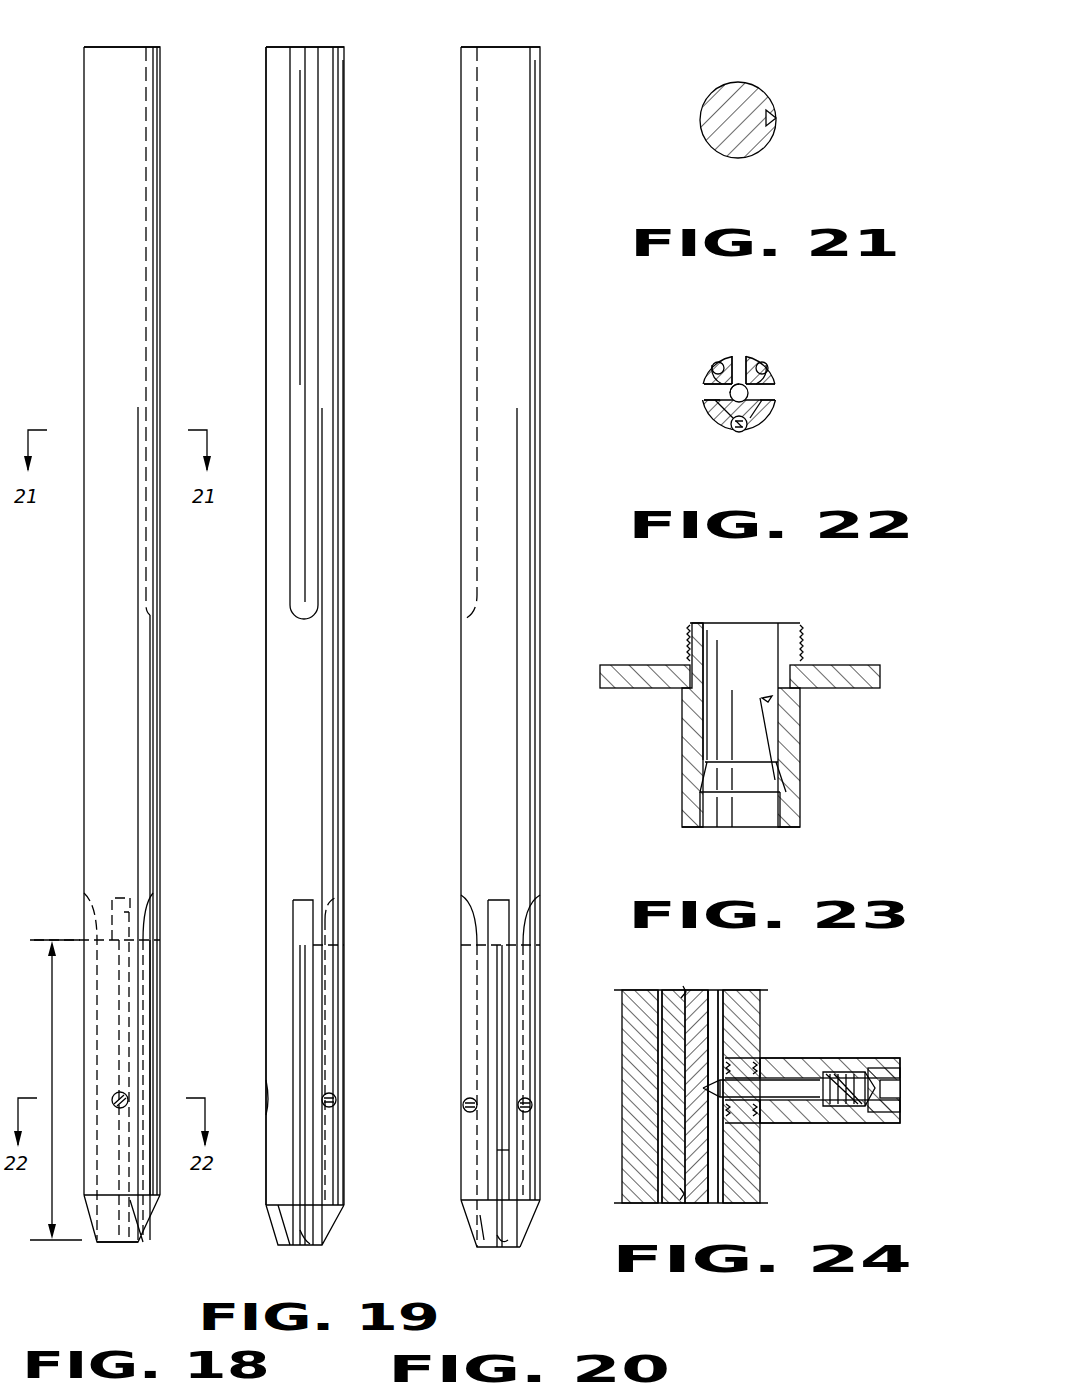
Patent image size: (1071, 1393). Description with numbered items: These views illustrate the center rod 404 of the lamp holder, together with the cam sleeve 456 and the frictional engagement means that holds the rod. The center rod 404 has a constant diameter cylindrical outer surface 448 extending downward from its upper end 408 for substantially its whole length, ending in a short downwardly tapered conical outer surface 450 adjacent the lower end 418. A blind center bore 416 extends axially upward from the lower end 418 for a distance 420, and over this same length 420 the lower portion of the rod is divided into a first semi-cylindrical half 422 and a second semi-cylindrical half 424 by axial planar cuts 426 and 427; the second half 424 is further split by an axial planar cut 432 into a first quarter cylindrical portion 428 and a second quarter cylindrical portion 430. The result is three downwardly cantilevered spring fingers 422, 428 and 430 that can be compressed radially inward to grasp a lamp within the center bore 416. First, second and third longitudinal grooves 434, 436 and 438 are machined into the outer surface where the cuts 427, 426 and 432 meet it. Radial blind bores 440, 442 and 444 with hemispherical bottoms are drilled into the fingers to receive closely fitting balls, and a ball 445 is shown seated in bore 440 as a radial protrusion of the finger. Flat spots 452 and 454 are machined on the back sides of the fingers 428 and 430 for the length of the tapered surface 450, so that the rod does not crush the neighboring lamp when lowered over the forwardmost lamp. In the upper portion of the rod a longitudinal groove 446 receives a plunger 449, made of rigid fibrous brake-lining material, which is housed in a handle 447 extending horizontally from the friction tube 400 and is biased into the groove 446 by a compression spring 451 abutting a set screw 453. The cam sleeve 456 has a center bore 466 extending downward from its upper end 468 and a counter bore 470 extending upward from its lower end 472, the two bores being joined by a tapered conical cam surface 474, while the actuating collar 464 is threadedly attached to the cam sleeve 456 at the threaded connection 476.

In FIG. 24, the friction tube 400 is at (765, 1008).
In FIG. 18, the center rod 404 is at (156, 63).
In FIG. 19, the center rod 404 is at (338, 62).
In FIG. 20, the center rod 404 is at (544, 62).
In FIG. 21, the center rod 404 is at (755, 84).
In FIG. 22, the center rod 404 is at (782, 355).
In FIG. 24, the center rod 404 is at (672, 1010).
In FIG. 18, the upper end 408 is at (102, 46).
In FIG. 19, the upper end 408 is at (285, 46).
In FIG. 20, the upper end 408 is at (486, 46).
In FIG. 22, the blind center bore 416 is at (722, 410).
In FIG. 18, the lower end 418 is at (105, 1248).
In FIG. 18, the distance 420 is at (48, 996).
In FIG. 18, the first semi-cylindrical half 422 is at (160, 999).
In FIG. 19, the first semi-cylindrical half 422 is at (268, 1038).
In FIG. 22, the first semi-cylindrical half 422 is at (768, 418).
In FIG. 19, the second semi-cylindrical half 424 is at (340, 962).
In FIG. 22, the second semi-cylindrical half 424 is at (726, 368).
In FIG. 19, the axial planar cut 426 is at (304, 1248).
In FIG. 22, the axial planar cut 426 is at (764, 388).
In FIG. 22, the axial planar cut 427 is at (728, 391).
In FIG. 20, the first quarter cylindrical portion 428 is at (470, 1026).
In FIG. 20, the second quarter cylindrical portion 430 is at (538, 965).
In FIG. 20, the axial planar cut 432 is at (504, 1250).
In FIG. 22, the axial planar cut 432 is at (748, 354).
In FIG. 18, the first longitudinal groove 434 is at (85, 945).
In FIG. 20, the first longitudinal groove 434 is at (522, 1160).
In FIG. 22, the first longitudinal groove 434 is at (716, 398).
In FIG. 18, the second longitudinal groove 436 is at (152, 952).
In FIG. 19, the second longitudinal groove 436 is at (296, 1175).
In FIG. 20, the second longitudinal groove 436 is at (476, 1134).
In FIG. 22, the second longitudinal groove 436 is at (768, 398).
In FIG. 18, the third longitudinal groove 438 is at (128, 898).
In FIG. 19, the third longitudinal groove 438 is at (328, 992).
In FIG. 20, the third longitudinal groove 438 is at (496, 1152).
In FIG. 22, the third longitudinal groove 438 is at (736, 354).
In FIG. 18, the radial blind bore 440 is at (128, 1097).
In FIG. 19, the radial blind bore 440 is at (266, 1104).
In FIG. 22, the radial blind bore 440 is at (735, 430).
In FIG. 19, the radial blind bore 442 is at (336, 1098).
In FIG. 20, the radial blind bore 442 is at (462, 1108).
In FIG. 20, the radial blind bore 444 is at (533, 1107).
In FIG. 22, the radial blind bore 444 is at (712, 366).
In FIG. 22, the ball 445 is at (743, 431).
In FIG. 18, the longitudinal groove 446 is at (152, 205).
In FIG. 19, the longitudinal groove 446 is at (312, 110).
In FIG. 20, the longitudinal groove 446 is at (476, 150).
In FIG. 21, the longitudinal groove 446 is at (776, 120).
In FIG. 24, the longitudinal groove 446 is at (712, 1140).
In FIG. 24, the handle 447 is at (808, 1058).
In FIG. 18, the cylindrical outer surface 448 is at (160, 682).
In FIG. 24, the plunger 449 is at (762, 1092).
In FIG. 18, the tapered conical outer surface 450 is at (145, 1225).
In FIG. 24, the compression spring 451 is at (866, 1110).
In FIG. 19, the flat spot 452 is at (318, 1212).
In FIG. 20, the flat spot 452 is at (475, 1228).
In FIG. 24, the set screw 453 is at (896, 1075).
In FIG. 20, the flat spot 454 is at (516, 1217).
In FIG. 23, the cam sleeve 456 is at (792, 722).
In FIG. 23, the actuating collar 464 is at (650, 664).
In FIG. 23, the center bore 466 is at (778, 650).
In FIG. 23, the upper end 468 is at (785, 625).
In FIG. 23, the counter bore 470 is at (775, 805).
In FIG. 23, the lower end 472 is at (788, 815).
In FIG. 23, the tapered conical cam surface 474 is at (776, 780).
In FIG. 23, the threaded connection 476 is at (796, 666).